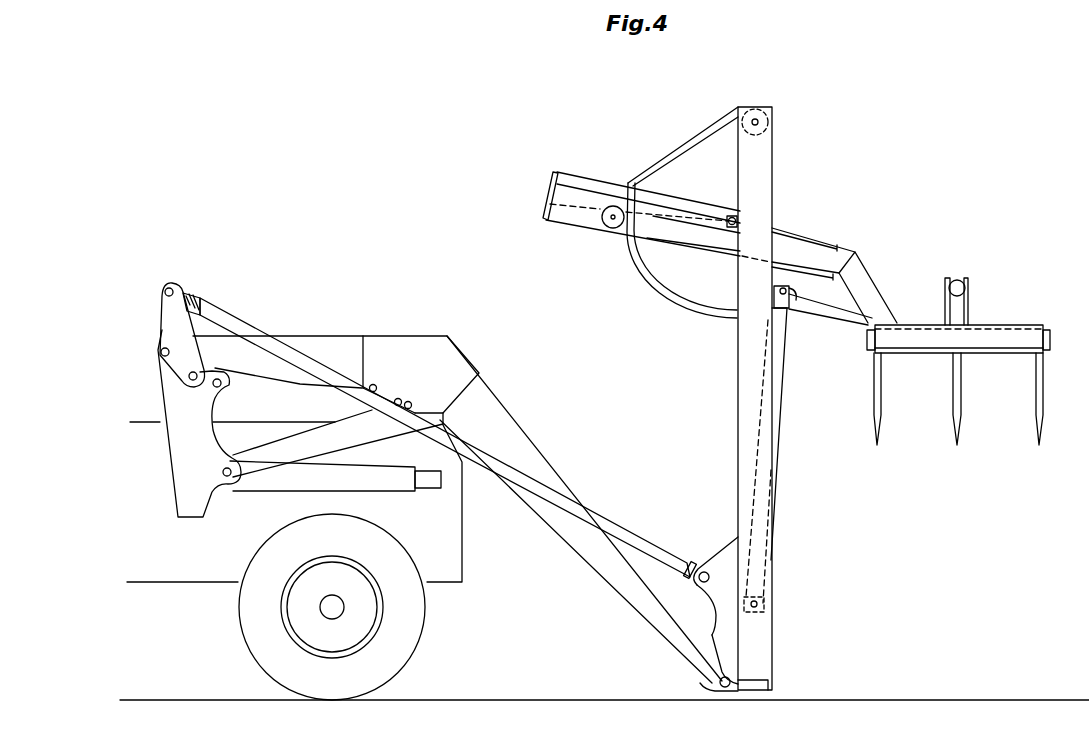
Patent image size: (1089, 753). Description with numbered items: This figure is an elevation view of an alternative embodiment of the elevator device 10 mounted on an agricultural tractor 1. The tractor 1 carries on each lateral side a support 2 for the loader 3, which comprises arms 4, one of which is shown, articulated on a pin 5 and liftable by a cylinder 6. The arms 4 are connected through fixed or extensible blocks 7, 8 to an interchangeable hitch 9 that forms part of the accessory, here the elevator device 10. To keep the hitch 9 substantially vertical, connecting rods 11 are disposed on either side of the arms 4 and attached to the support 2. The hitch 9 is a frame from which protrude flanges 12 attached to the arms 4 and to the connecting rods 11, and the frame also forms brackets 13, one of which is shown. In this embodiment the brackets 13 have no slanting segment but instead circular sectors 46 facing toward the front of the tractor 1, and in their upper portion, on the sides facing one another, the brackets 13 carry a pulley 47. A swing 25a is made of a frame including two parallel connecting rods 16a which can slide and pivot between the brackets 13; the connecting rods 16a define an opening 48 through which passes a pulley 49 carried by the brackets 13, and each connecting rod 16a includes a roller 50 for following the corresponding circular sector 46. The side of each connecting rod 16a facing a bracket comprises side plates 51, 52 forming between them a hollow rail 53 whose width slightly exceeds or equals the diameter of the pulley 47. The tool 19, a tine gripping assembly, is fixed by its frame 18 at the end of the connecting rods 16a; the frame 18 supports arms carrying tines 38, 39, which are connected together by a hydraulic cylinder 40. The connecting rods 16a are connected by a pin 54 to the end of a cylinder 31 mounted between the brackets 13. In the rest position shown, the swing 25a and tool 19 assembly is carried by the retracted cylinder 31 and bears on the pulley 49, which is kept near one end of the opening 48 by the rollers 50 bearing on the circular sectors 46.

The agricultural tractor 1 is at (445, 534).
The support 2 is at (264, 480).
The loader 3 is at (545, 528).
The arm 4 is at (513, 430).
The support arm 5 is at (165, 352).
The cylinder 6 is at (350, 428).
The block 7 is at (705, 566).
The block 8 is at (716, 683).
The hitch 9 is at (713, 608).
The elevator device 10 is at (728, 441).
The connecting rod 11 is at (545, 496).
The flange 12 is at (725, 637).
The bracket 13 is at (745, 385).
The connecting rod 16a is at (810, 250).
The frame 18 is at (1008, 325).
The tool 19 is at (932, 432).
The swing 25a is at (797, 232).
The cylinder 31 is at (780, 385).
The tine 38 is at (952, 391).
The tine 39 is at (1042, 388).
The hydraulic cylinder 40 is at (962, 280).
The circular sector 46 is at (655, 286).
The pulley 47 is at (770, 125).
The opening 48 is at (603, 196).
The pulley 49 is at (740, 221).
The roller 50 is at (609, 228).
The side plate 51 is at (852, 247).
The side plate 52 is at (797, 292).
The hollow rail 53 is at (718, 238).
The pin 54 is at (800, 302).